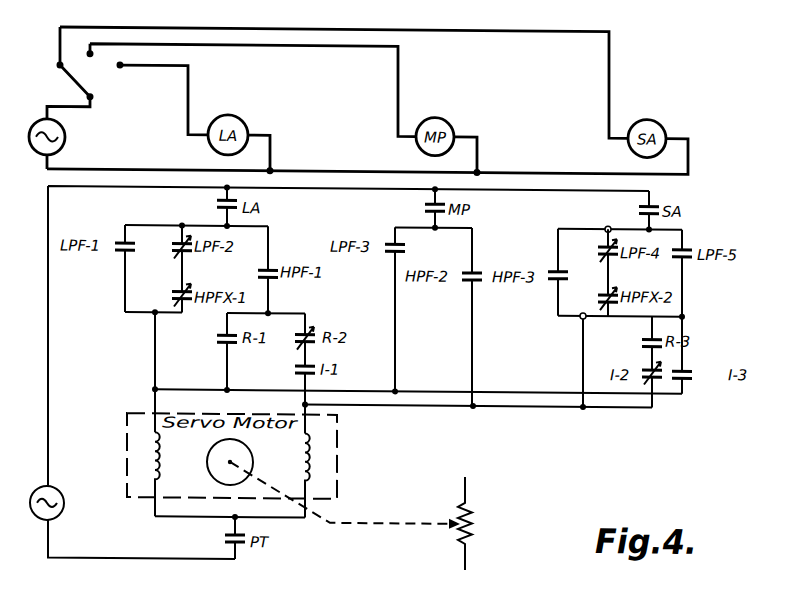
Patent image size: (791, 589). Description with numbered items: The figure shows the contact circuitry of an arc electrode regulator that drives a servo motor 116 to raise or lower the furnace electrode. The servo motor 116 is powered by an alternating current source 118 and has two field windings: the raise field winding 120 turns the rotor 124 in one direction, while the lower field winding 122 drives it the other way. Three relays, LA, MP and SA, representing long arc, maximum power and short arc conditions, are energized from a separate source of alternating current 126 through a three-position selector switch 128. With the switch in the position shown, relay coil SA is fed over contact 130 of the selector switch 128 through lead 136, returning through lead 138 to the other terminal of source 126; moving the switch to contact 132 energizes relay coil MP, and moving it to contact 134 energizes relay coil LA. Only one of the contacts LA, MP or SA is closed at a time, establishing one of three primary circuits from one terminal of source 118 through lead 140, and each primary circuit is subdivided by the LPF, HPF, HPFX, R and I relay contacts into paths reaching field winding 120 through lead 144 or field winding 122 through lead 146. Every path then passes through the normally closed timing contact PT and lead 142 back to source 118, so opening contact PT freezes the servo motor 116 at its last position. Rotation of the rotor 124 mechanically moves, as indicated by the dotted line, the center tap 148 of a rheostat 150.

The servo motor 116 is at (263, 490).
The alternating current source 118 is at (57, 513).
The field winding 120 is at (163, 470).
The field winding 122 is at (311, 441).
The rotor 124 is at (212, 442).
The source of alternating current 126 is at (43, 153).
The selector switch 128 is at (100, 89).
The contact 130 is at (57, 64).
The contact 132 is at (86, 52).
The contact 134 is at (121, 67).
The lead 136 is at (446, 27).
The lead 138 is at (371, 168).
The lead 140 is at (110, 187).
The lead 142 is at (130, 557).
The lead 144 is at (545, 389).
The lead 146 is at (440, 404).
The center tap 148 is at (453, 519).
The rheostat 150 is at (475, 511).